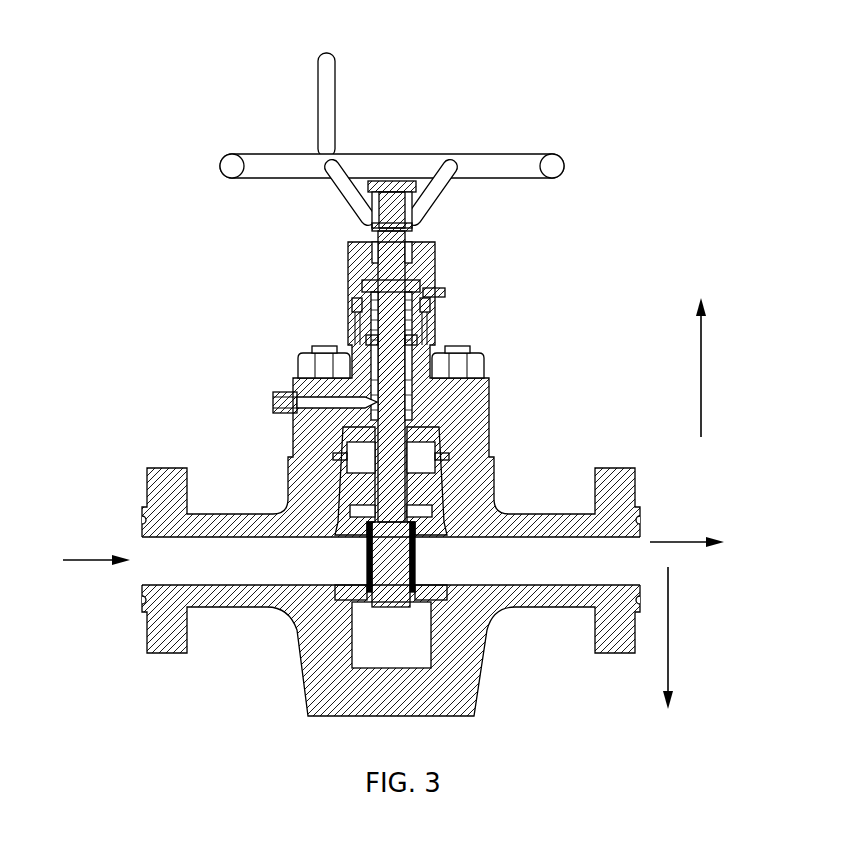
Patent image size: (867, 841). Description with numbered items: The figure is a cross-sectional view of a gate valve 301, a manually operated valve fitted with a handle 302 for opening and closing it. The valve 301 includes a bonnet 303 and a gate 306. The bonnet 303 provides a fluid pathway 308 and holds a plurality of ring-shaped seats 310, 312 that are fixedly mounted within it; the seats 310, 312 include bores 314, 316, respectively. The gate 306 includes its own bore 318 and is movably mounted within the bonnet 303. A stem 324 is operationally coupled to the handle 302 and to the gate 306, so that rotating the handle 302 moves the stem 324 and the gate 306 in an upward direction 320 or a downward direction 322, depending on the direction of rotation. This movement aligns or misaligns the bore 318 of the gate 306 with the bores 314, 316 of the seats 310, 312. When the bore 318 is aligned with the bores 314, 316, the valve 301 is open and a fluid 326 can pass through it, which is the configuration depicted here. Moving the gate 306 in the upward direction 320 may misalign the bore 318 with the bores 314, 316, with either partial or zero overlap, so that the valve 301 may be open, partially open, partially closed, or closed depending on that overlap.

The gate valve 301 is at (222, 42).
The handle 302 is at (507, 167).
The bonnet 303 is at (481, 408).
The gate 306 is at (417, 547).
The fluid pathway 308 is at (218, 567).
The seat 310 is at (333, 520).
The seat 312 is at (448, 498).
The bore 314 is at (350, 562).
The bore 316 is at (430, 563).
The bore 318 is at (389, 597).
The upward direction 320 is at (701, 357).
The downward direction 322 is at (669, 637).
The stem 324 is at (437, 318).
The fluid 326 is at (93, 560).